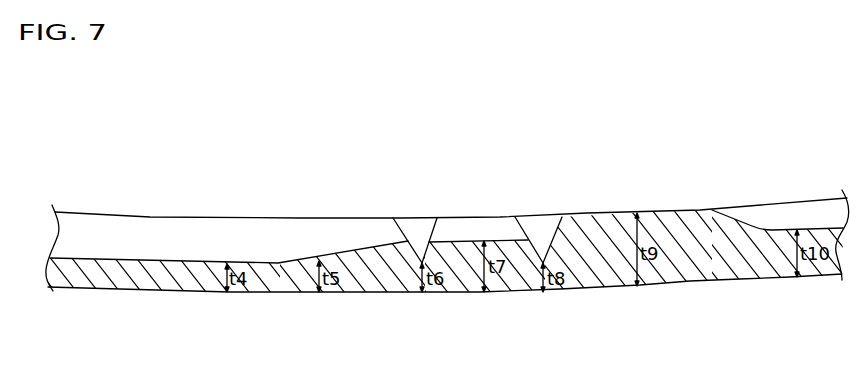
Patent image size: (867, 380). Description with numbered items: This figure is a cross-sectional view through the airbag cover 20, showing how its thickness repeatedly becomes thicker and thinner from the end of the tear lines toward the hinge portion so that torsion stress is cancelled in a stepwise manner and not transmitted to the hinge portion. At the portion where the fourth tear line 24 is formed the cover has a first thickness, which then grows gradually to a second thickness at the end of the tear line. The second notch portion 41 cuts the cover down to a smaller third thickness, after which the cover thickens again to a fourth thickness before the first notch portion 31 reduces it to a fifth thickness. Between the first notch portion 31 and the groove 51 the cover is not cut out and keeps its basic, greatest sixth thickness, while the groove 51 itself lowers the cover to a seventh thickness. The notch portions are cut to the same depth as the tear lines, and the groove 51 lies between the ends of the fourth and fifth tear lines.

The airbag cover 20 is at (135, 289).
The fourth tear line 24 is at (212, 242).
The second notch portion 41 is at (428, 235).
The first notch portion 31 is at (550, 232).
The groove 51 is at (802, 218).